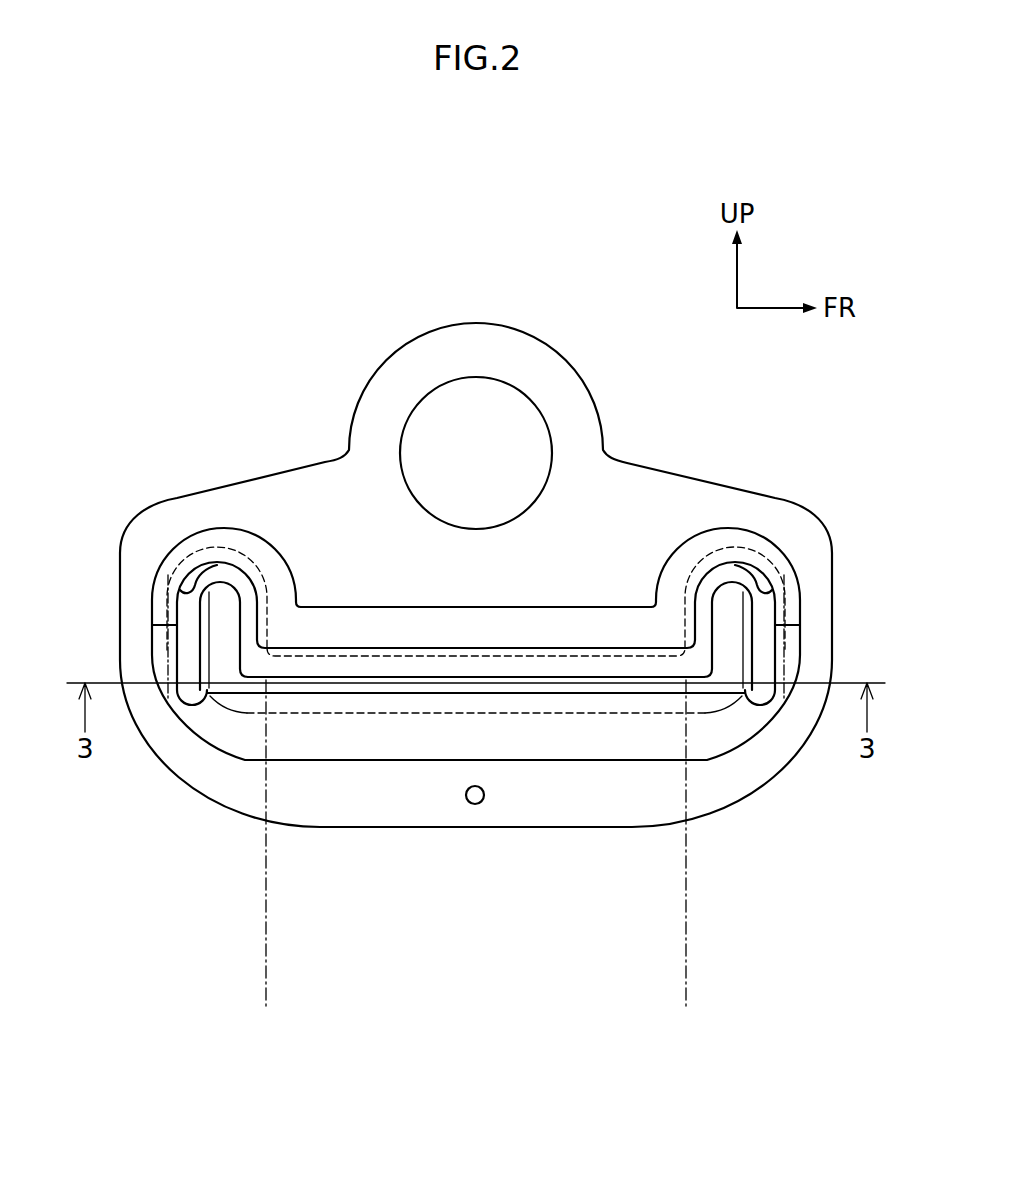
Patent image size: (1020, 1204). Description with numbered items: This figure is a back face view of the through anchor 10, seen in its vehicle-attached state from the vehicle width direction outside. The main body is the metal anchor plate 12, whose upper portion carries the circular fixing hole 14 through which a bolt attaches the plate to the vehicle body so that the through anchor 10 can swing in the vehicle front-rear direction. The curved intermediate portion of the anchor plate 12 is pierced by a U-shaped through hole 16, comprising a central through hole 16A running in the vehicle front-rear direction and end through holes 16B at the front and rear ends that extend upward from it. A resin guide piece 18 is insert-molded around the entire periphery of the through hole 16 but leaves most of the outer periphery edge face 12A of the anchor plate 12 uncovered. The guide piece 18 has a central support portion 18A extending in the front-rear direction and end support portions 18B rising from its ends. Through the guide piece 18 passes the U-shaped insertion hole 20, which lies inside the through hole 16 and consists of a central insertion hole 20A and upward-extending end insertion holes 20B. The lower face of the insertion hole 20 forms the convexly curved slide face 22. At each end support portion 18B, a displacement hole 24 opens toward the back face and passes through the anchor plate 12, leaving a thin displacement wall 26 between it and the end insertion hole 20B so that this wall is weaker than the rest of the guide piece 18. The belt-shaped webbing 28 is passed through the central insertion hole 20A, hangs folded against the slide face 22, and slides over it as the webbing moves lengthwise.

The through anchor 10 is at (255, 316).
The anchor plate 12 is at (374, 358).
The outer periphery edge face 12A is at (548, 830).
The fixing hole 14 is at (497, 402).
The through hole 16 is at (548, 660).
The central through hole 16A is at (615, 660).
The end through holes 16B is at (160, 640).
The guide piece 18 is at (205, 513).
The central support portion 18A is at (481, 605).
The end support portions 18B is at (232, 528).
The insertion hole 20 is at (370, 688).
The central insertion hole 20A is at (442, 686).
The end insertion holes 20B is at (220, 615).
The slide face 22 is at (370, 700).
The displacement hole 24 is at (193, 587).
The displacement wall 26 is at (181, 713).
The webbing 28 is at (265, 890).